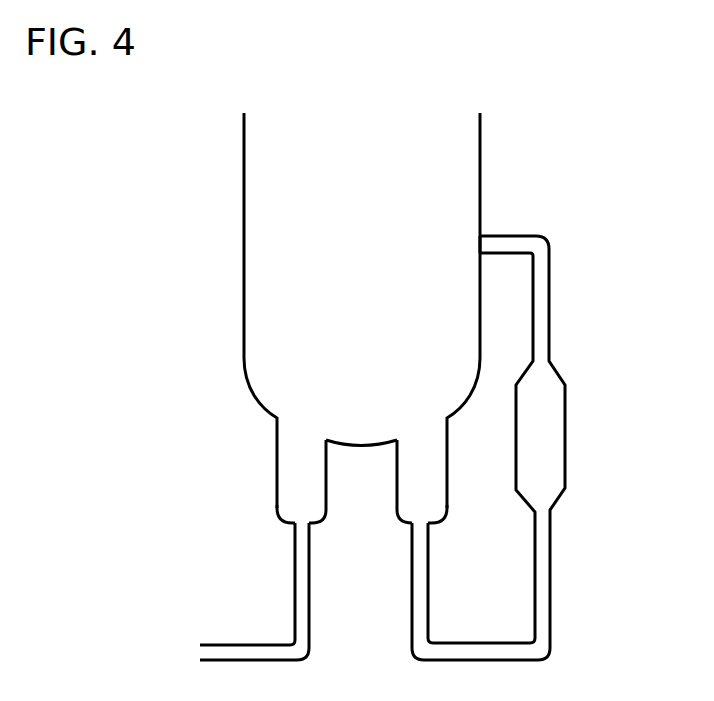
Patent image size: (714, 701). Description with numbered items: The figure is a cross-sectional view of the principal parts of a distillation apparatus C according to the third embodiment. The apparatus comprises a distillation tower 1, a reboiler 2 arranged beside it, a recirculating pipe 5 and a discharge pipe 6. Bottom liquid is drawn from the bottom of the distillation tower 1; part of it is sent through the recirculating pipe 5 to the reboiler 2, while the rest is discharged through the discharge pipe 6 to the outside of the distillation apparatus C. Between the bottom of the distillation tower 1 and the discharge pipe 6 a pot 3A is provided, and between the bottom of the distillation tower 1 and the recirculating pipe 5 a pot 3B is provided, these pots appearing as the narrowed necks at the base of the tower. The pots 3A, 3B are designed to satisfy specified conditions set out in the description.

The distillation tower 1 is at (396, 310).
The reboiler 2 is at (579, 396).
The pot 3A is at (273, 494).
The pot 3B is at (450, 493).
The recirculating pipe 5 is at (437, 595).
The discharge pipe 6 is at (317, 595).
The distillation apparatus C is at (577, 192).